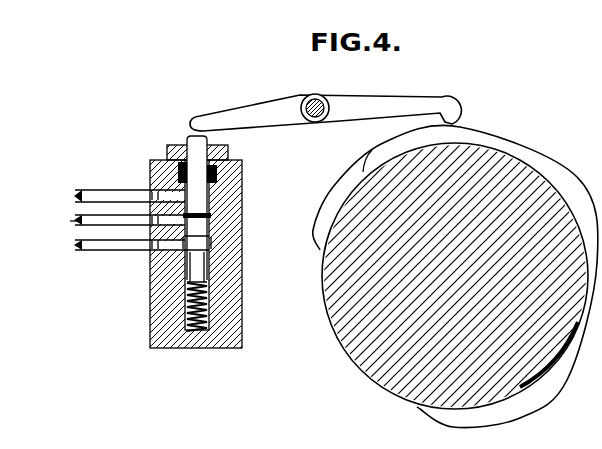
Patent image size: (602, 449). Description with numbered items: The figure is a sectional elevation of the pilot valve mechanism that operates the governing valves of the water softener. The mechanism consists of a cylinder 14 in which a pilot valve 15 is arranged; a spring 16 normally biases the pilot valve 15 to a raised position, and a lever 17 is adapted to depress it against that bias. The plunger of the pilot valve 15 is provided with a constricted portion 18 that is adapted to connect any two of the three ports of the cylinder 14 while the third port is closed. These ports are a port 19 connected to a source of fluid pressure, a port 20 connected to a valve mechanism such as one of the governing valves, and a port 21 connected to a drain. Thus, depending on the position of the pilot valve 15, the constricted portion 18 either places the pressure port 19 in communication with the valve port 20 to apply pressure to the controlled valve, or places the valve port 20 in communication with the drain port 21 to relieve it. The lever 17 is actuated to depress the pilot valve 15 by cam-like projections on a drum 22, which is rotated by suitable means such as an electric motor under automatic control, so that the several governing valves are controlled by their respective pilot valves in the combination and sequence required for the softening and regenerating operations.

The cylinder 14 is at (205, 207).
The pilot valve 15 is at (203, 268).
The spring 16 is at (203, 313).
The lever 17 is at (268, 106).
The constricted portion 18 is at (205, 242).
The port 19 is at (153, 281).
The port 20 is at (200, 225).
The port 21 is at (170, 185).
The drum 22 is at (322, 290).